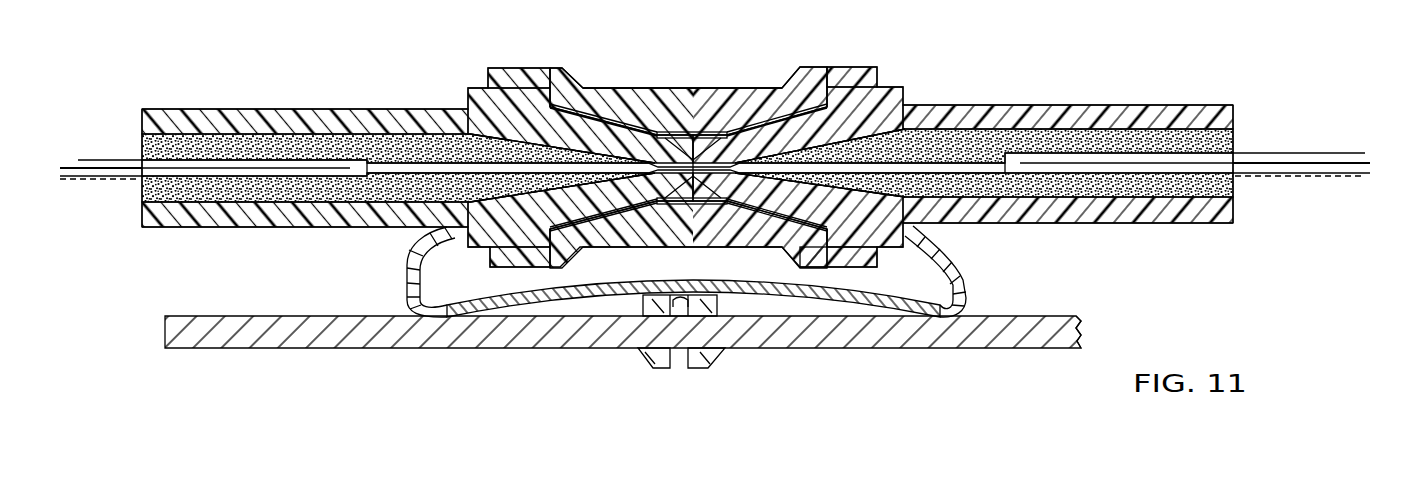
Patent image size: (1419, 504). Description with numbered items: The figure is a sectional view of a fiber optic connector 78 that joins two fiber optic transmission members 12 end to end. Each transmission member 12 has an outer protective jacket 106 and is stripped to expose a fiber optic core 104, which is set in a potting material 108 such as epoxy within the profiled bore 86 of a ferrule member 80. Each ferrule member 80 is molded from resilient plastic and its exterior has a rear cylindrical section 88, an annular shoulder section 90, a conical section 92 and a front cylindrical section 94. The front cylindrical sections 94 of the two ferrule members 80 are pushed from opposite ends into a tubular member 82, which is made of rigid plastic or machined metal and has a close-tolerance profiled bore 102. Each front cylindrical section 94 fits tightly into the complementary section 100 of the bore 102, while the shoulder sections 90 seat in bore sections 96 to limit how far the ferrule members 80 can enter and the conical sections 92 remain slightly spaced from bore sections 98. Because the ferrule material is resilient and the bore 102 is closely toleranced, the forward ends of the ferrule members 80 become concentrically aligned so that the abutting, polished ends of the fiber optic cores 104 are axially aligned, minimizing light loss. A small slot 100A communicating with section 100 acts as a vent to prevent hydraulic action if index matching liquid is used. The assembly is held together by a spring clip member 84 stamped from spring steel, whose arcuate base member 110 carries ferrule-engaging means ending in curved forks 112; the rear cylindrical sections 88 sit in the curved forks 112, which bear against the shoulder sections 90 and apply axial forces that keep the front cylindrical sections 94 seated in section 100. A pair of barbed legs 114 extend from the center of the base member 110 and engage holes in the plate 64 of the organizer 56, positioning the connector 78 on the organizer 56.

The fiber optic transmission member 12 is at (103, 158).
The organizer 56 is at (291, 315).
The plate 64 is at (1078, 316).
The fiber optic connector 78 is at (641, 68).
The ferrule member 80 is at (345, 106).
The tubular member 82 is at (748, 95).
The spring clip member 84 is at (968, 280).
The profiled bore 86 is at (214, 143).
The rear cylindrical section 88 is at (355, 222).
The annular shoulder section 90 is at (500, 100).
The conical section 92 is at (560, 128).
The front cylindrical section 94 is at (713, 140).
The bore section 96 is at (525, 88).
The bore section 98 is at (597, 206).
The complementary section 100 is at (672, 195).
The slot 100A is at (722, 130).
The profiled bore 102 is at (612, 118).
The fiber optic core 104 is at (416, 165).
The outer protective jacket 106 is at (113, 180).
The potting material 108 is at (275, 143).
The base member 110 is at (792, 292).
The curved fork 112 is at (407, 292).
The barbed leg 114 is at (678, 368).